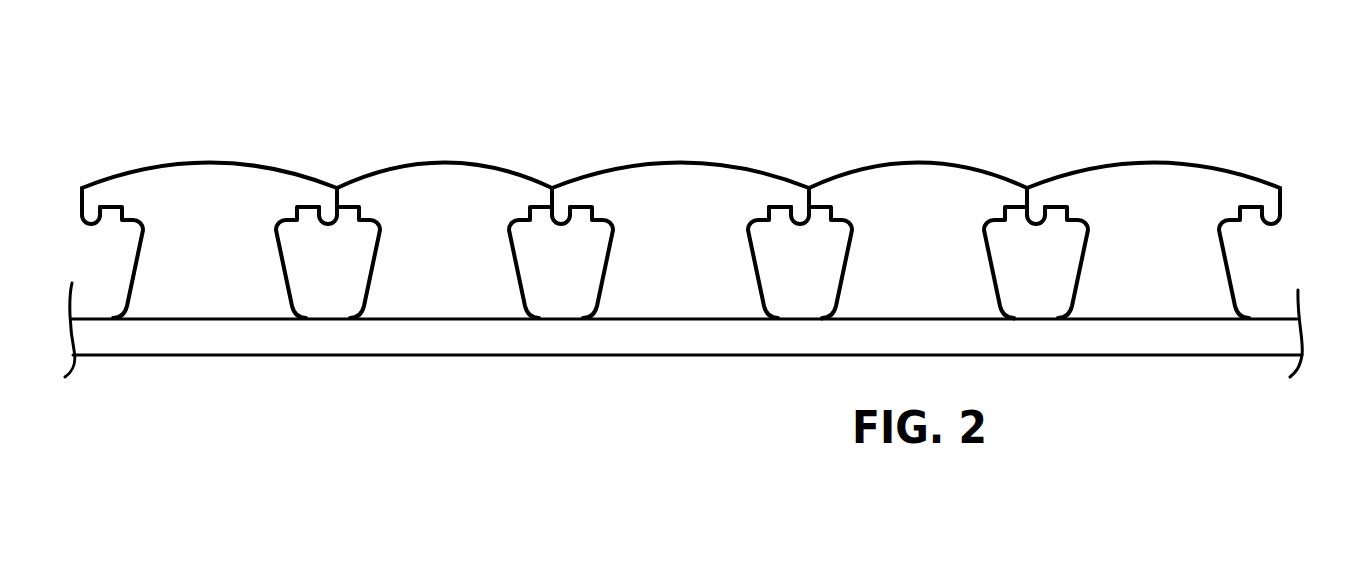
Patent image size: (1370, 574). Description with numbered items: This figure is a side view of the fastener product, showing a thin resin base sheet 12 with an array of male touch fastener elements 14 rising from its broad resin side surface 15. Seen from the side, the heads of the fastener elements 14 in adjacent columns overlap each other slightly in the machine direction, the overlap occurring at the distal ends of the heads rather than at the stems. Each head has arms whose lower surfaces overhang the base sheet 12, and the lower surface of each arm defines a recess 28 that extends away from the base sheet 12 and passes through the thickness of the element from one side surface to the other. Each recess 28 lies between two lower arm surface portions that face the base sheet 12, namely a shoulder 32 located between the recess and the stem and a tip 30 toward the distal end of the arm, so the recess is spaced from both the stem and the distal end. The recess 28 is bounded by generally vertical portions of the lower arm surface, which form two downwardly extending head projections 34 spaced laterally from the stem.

The base sheet 12 is at (268, 357).
The male touch fastener elements 14 is at (380, 141).
The broad resin side surface 15 is at (897, 320).
The recess 28 is at (109, 230).
The tip 30 is at (568, 225).
The shoulder 32 is at (614, 232).
The downwardly extending head projections 34 is at (775, 210).